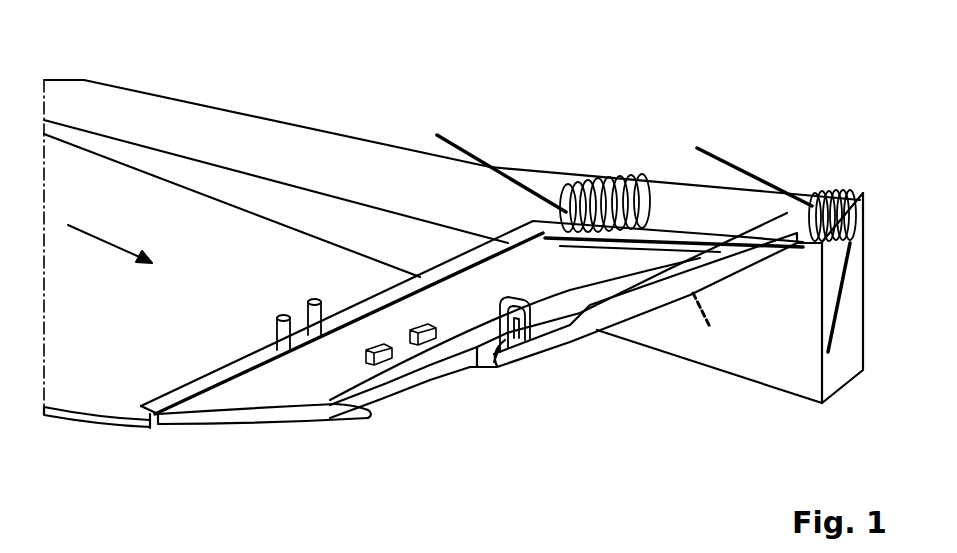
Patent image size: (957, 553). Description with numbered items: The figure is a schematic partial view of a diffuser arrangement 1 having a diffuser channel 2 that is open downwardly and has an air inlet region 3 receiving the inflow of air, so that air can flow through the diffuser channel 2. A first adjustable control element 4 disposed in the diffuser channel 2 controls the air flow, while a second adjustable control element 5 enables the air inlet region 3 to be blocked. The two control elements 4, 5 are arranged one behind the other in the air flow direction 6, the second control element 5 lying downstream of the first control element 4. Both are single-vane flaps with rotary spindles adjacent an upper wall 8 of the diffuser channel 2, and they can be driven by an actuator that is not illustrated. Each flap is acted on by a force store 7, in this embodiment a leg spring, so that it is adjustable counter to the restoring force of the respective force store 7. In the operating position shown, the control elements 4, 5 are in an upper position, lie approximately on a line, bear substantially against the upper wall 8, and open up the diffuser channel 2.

The diffuser arrangement 1 is at (676, 88).
The diffuser channel 2 is at (674, 367).
The air inlet region 3 is at (727, 388).
The first adjustable control element 4 is at (211, 425).
The second adjustable control element 5 is at (447, 385).
The air flow direction 6 is at (103, 243).
The force store 7 is at (588, 187).
The upper wall 8 is at (280, 140).